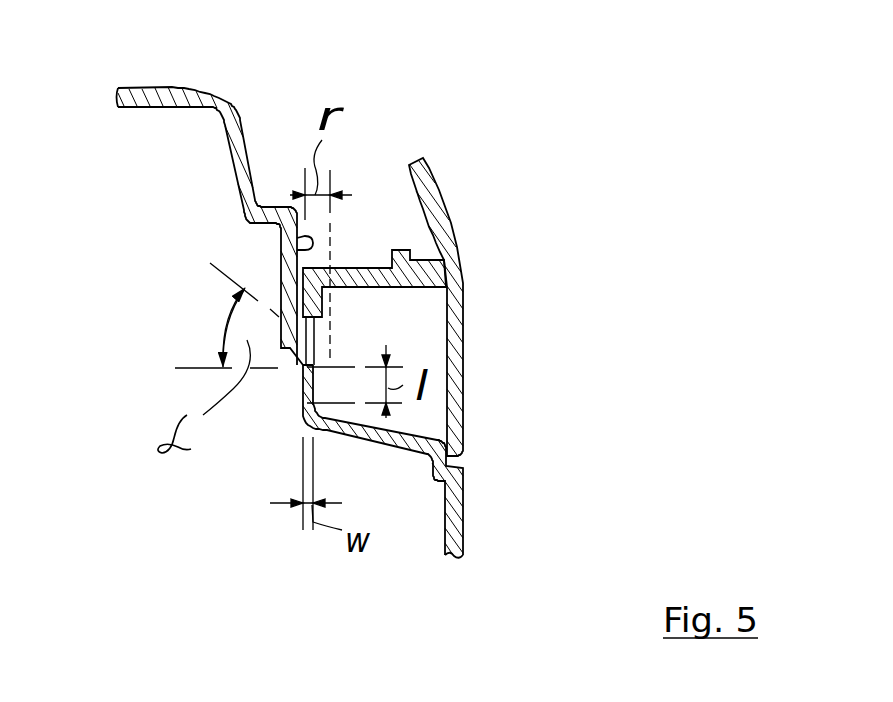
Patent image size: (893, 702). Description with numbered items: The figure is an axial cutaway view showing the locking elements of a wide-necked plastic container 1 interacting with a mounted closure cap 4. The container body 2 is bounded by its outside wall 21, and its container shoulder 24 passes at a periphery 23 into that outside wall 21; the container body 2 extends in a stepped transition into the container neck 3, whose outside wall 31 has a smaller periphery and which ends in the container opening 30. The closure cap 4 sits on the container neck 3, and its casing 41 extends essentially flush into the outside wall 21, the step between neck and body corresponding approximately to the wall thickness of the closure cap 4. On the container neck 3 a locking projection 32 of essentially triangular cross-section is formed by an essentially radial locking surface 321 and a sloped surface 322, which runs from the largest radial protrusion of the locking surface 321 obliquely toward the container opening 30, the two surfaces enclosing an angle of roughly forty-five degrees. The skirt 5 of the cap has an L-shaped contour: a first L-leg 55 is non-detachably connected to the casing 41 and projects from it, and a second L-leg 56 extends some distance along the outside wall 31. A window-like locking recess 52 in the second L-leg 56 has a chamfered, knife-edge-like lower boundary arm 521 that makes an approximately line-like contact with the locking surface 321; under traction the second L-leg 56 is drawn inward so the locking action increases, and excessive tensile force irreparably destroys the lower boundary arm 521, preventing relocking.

The wide-necked plastic container 1 is at (585, 447).
The container body 2 is at (465, 523).
The outside wall of the container body 21 is at (468, 545).
The periphery 23 is at (460, 468).
The container shoulder 24 is at (417, 420).
The container neck 3 is at (241, 143).
The container opening 30 is at (146, 104).
The outside wall of the container neck 31 is at (298, 243).
The locking projection 32 is at (335, 352).
The locking surface 321 is at (303, 367).
The sloped surface 322 is at (337, 341).
The closure cap 4 is at (488, 197).
The casing 41 is at (463, 355).
The skirt 5 is at (300, 283).
The locking recess 52 is at (312, 345).
The lower boundary arm 521 is at (303, 372).
The first L-leg 55 is at (338, 277).
The second L-leg 56 is at (283, 297).